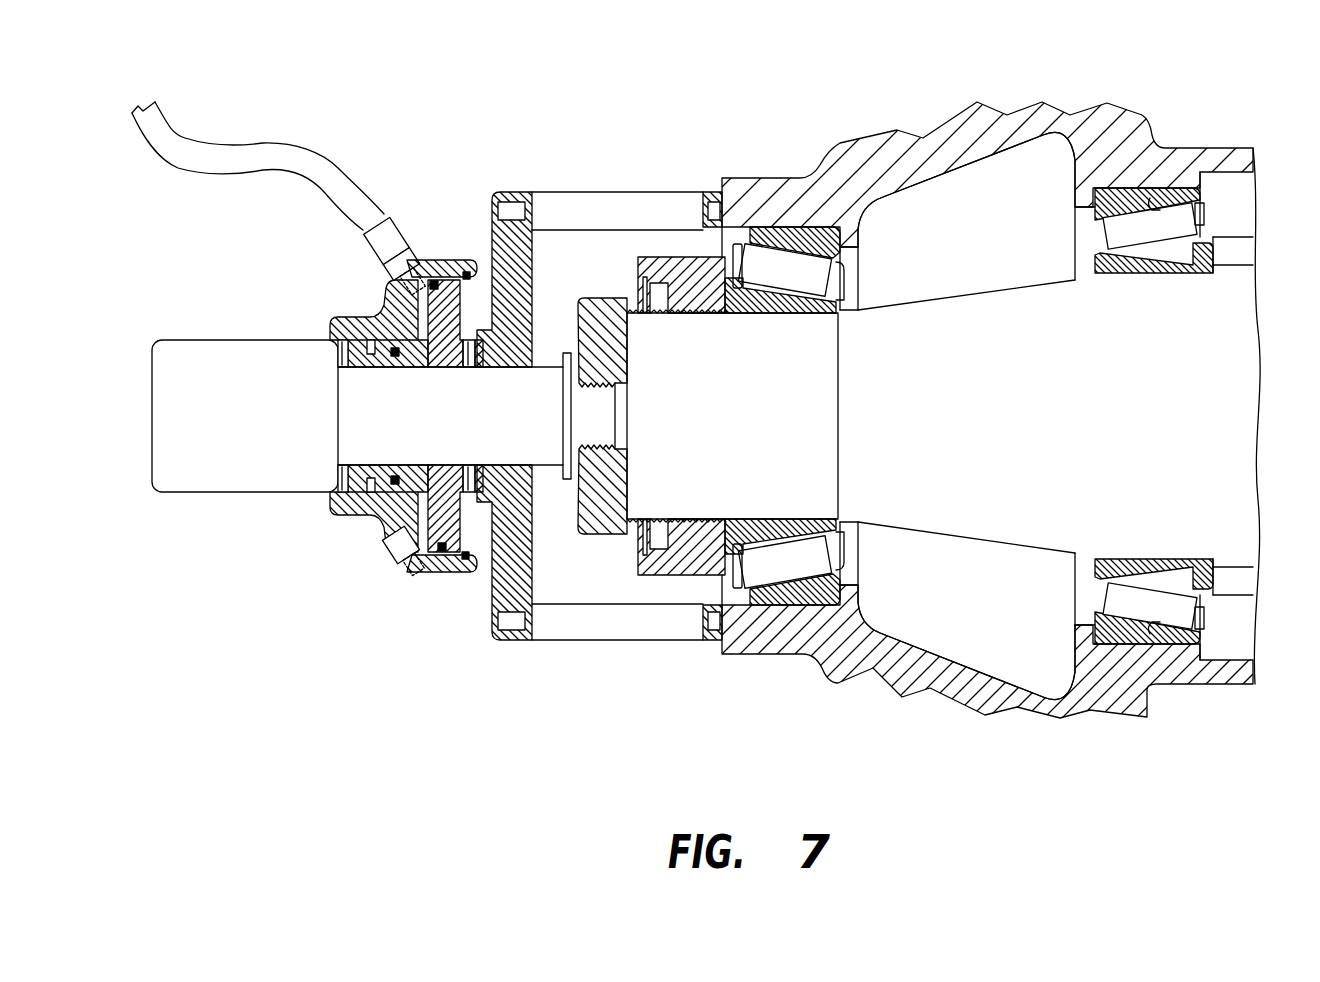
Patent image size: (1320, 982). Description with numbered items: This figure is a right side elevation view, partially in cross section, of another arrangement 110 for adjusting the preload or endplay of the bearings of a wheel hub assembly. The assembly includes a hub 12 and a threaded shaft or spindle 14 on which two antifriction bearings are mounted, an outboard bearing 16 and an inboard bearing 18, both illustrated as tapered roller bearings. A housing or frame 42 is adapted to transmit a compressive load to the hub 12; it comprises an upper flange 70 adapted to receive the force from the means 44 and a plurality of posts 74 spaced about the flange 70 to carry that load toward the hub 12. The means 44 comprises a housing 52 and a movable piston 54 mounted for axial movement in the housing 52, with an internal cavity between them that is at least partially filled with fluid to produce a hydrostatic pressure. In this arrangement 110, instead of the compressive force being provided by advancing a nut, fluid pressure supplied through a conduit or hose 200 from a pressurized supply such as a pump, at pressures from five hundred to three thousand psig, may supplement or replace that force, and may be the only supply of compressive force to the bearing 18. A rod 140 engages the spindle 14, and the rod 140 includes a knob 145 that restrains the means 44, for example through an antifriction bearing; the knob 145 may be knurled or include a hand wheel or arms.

The hub 12 is at (798, 178).
The spindle 14 is at (675, 431).
The outboard bearing 16 is at (781, 487).
The inboard bearing 18 is at (1140, 300).
The housing or frame 42 is at (699, 110).
The means 44 is at (369, 626).
The housing 52 is at (343, 322).
The piston 54 is at (452, 282).
The upper flange 70 is at (505, 196).
The posts 74 is at (613, 194).
The arrangement 110 is at (440, 112).
The rod 140 is at (432, 431).
The knob 145 is at (207, 345).
The hose 200 is at (355, 190).